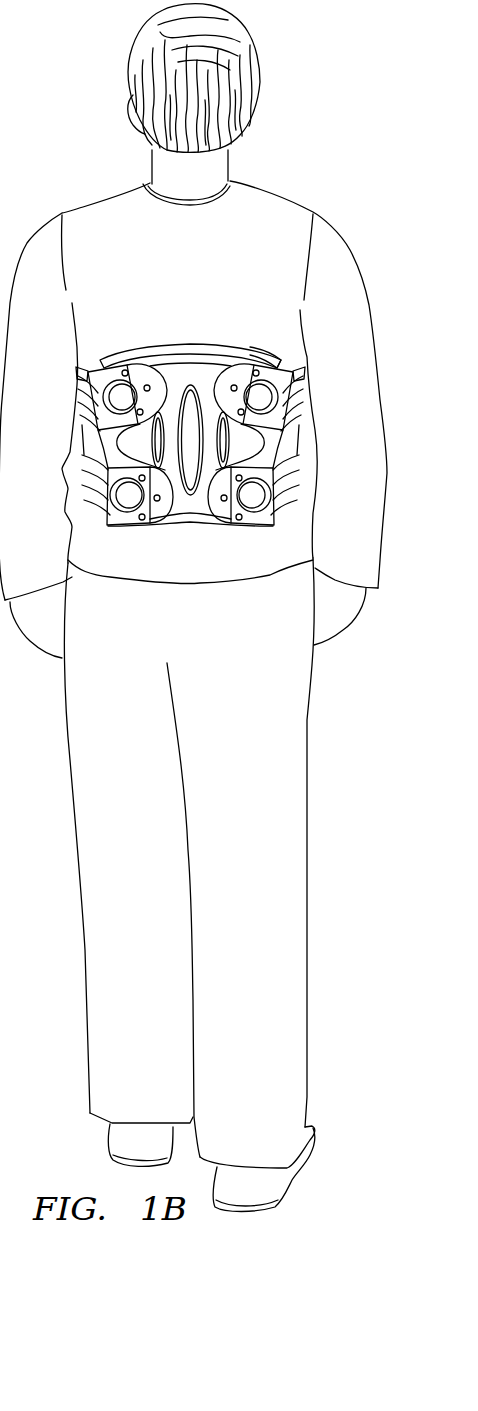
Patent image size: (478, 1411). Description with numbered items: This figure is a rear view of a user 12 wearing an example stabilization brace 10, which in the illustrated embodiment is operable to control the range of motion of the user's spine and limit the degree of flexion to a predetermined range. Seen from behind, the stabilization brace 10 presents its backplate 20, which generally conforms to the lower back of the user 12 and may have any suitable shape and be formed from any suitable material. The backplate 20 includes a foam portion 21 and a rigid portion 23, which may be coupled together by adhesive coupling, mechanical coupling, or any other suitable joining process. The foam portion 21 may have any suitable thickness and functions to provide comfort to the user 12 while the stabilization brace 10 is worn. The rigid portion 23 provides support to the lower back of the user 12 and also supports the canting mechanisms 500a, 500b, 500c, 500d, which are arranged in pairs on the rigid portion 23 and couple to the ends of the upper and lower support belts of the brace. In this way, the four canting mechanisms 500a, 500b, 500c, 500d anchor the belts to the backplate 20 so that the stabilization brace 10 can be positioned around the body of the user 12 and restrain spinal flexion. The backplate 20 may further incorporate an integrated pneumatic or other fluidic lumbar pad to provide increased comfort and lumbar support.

The stabilization brace 10 is at (220, 317).
The user 12 is at (309, 146).
The backplate 20 is at (173, 339).
The foam portion 21 is at (255, 356).
The rigid portion 23 is at (185, 508).
The canting mechanism 500a is at (97, 372).
The canting mechanism 500b is at (284, 384).
The canting mechanism 500c is at (121, 518).
The canting mechanism 500d is at (260, 518).